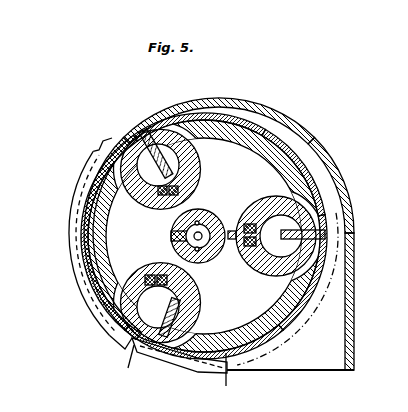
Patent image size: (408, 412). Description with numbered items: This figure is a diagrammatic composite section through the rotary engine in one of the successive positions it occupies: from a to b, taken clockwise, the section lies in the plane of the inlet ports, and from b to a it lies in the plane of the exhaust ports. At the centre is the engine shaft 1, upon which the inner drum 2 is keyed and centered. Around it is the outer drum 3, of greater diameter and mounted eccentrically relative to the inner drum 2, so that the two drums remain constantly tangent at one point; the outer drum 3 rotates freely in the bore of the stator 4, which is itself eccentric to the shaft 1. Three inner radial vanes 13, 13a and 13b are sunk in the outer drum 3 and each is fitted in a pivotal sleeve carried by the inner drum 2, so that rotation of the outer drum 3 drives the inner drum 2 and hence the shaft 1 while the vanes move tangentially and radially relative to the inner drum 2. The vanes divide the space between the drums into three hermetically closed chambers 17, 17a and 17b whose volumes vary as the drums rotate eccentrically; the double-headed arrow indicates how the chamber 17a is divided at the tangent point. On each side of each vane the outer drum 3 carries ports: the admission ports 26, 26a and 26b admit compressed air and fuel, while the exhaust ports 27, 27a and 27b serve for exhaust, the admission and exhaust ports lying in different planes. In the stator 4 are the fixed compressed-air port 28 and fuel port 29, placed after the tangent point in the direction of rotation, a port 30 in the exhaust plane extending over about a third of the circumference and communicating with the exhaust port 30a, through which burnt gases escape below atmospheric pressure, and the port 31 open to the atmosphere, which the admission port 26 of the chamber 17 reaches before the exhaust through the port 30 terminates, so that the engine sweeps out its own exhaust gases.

The engine shaft 1 is at (210, 213).
The inner drum 2 is at (244, 323).
The outer drum 3 is at (338, 188).
The stator 4 is at (173, 115).
The inner radial vane 13 is at (161, 306).
The inner radial vane 13a is at (168, 165).
The inner radial vane 13b is at (331, 236).
The chamber 17 is at (299, 291).
The chamber 17a is at (123, 271).
The chamber 17b is at (286, 163).
The admission port 26 is at (197, 366).
The admission port 26a is at (113, 148).
The admission port 26b is at (331, 216).
The exhaust port 27 is at (327, 265).
The exhaust port 27a is at (143, 120).
The exhaust port 27b is at (228, 126).
The fixed port for admission of compressed air 28 is at (88, 211).
The fixed port for admission of fuel 29 is at (98, 157).
The port 30 is at (319, 180).
The exhaust port 30a is at (287, 289).
The port communicating with the atmosphere 31 is at (165, 360).
The section line point a is at (126, 365).
The section line point b is at (231, 376).